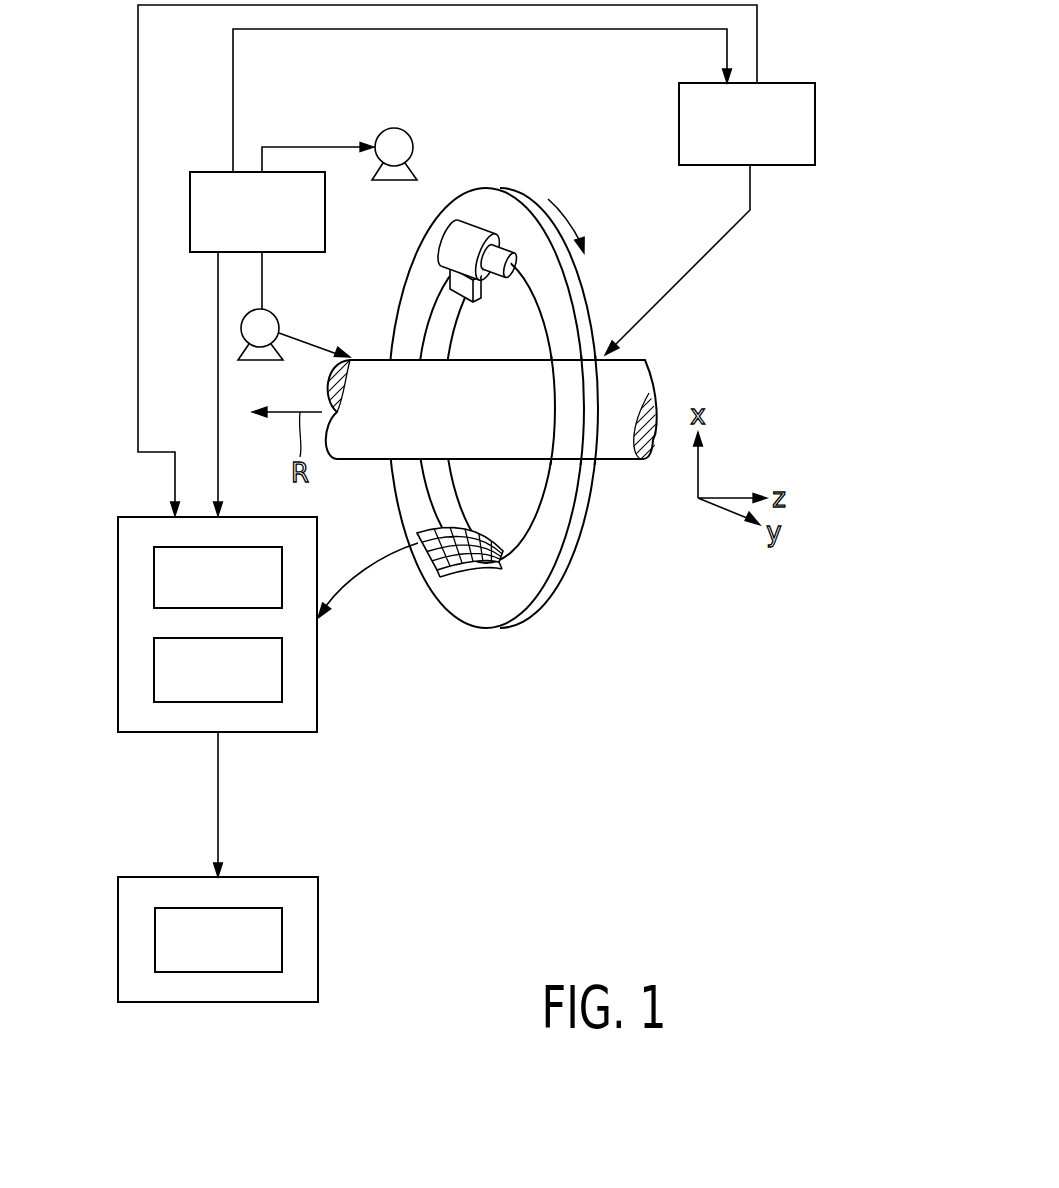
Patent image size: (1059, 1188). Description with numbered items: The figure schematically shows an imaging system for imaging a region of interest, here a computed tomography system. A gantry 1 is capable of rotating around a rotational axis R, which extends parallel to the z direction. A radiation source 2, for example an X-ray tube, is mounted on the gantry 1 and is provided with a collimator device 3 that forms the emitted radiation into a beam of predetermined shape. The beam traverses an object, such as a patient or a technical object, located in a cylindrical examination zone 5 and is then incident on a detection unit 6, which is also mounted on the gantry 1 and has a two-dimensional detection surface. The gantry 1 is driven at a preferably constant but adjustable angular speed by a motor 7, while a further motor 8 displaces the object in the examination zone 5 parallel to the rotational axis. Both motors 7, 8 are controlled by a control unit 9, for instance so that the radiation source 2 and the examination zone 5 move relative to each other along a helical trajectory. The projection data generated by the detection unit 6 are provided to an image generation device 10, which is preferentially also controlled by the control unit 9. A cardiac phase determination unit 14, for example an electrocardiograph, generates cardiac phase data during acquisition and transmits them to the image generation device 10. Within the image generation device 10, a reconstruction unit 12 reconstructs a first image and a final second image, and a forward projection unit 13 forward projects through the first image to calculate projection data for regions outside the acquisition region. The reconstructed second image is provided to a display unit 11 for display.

The gantry 1 is at (542, 557).
The radiation source 2 is at (463, 236).
The collimator device 3 is at (490, 289).
The cylindrical examination zone 5 is at (367, 360).
The detection unit 6 is at (447, 576).
The motor 7 is at (405, 128).
The further motor 8 is at (278, 318).
The control unit 9 is at (207, 172).
The image generation device 10 is at (235, 624).
The display unit 11 is at (318, 943).
The reconstruction unit 12 is at (154, 577).
The forward projection unit 13 is at (154, 672).
The cardiac phase determination unit 14 is at (799, 165).